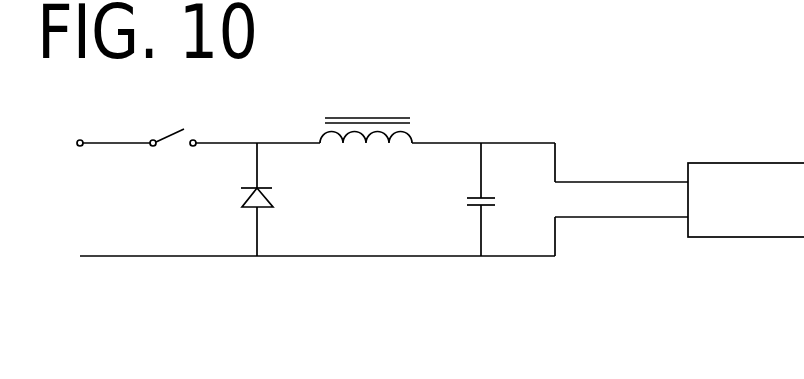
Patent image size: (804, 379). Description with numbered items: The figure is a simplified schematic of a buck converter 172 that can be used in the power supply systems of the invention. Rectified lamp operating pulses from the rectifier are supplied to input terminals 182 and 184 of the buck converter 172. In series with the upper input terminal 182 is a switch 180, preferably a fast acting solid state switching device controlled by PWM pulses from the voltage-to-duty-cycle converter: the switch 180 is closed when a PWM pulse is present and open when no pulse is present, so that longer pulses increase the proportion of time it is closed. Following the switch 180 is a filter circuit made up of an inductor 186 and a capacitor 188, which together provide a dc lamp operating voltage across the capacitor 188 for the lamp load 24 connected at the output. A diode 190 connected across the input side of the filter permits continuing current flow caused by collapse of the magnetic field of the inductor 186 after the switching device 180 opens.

The buck converter 172 is at (617, 103).
The switch 180 is at (180, 131).
The input terminal 182 is at (80, 140).
The input terminal 184 is at (80, 258).
The inductor 186 is at (397, 118).
The capacitor 188 is at (471, 206).
The diode 190 is at (273, 203).
The lamp load 24 is at (762, 163).